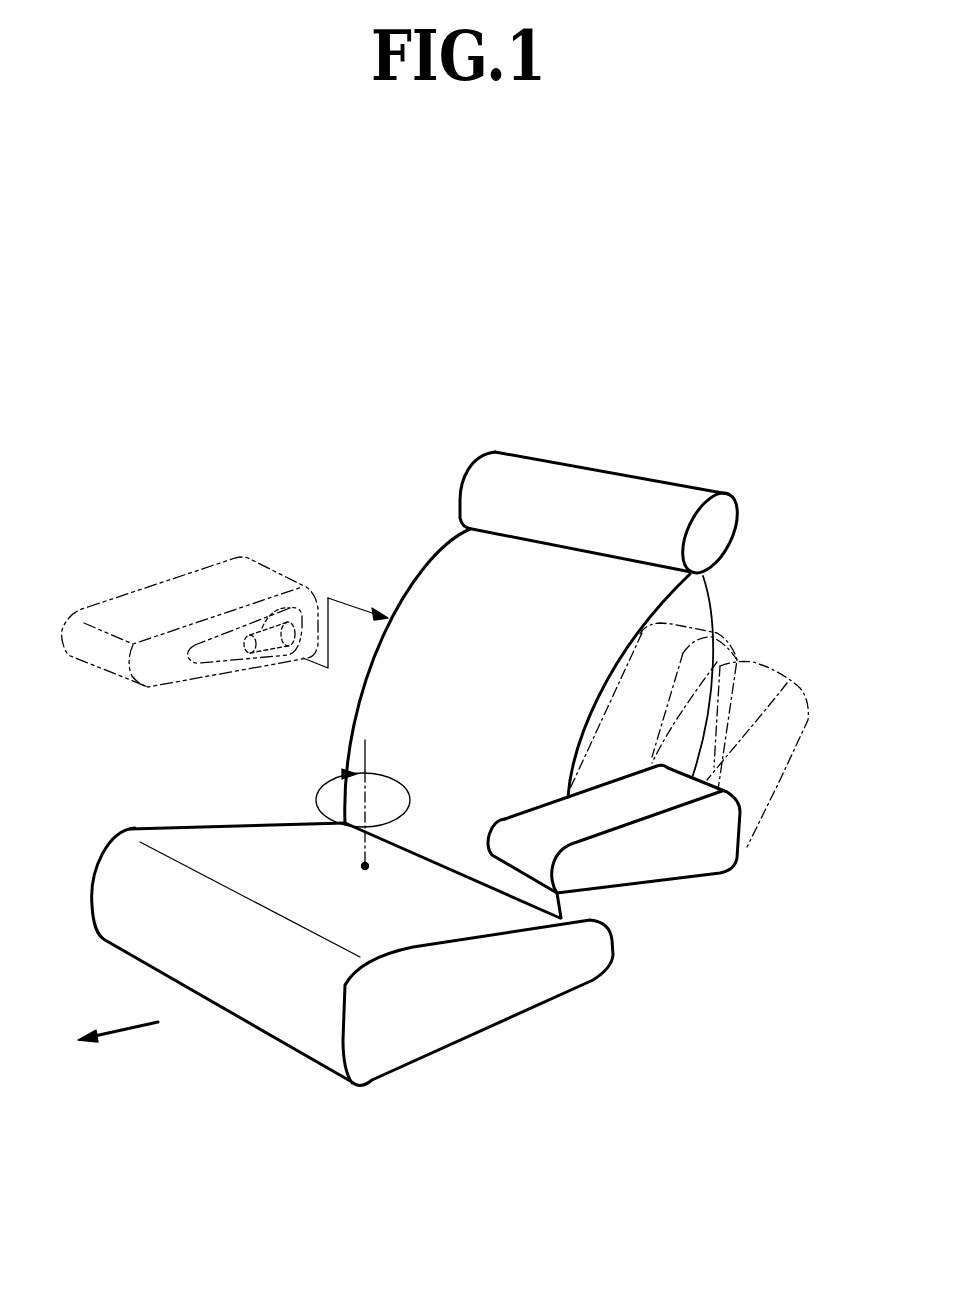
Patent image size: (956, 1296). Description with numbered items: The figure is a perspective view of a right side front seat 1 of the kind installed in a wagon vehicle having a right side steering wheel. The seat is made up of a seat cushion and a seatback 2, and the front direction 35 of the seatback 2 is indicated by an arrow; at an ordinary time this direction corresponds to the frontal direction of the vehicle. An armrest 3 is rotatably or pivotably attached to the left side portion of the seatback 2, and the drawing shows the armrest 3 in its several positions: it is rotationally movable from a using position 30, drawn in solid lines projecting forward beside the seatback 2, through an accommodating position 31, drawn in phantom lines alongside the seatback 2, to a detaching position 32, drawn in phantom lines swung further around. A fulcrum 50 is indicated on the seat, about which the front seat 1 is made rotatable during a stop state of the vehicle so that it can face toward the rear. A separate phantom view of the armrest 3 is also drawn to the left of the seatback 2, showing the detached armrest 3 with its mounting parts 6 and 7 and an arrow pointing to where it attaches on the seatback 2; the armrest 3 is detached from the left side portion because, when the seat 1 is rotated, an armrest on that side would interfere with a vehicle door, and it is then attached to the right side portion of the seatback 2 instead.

The front seat 1 is at (505, 993).
The seatback 2 is at (428, 585).
The armrest 3 is at (132, 593).
The mounting bracket 6 is at (318, 600).
The pivot knob 7 is at (242, 637).
The using position 30 is at (688, 880).
The accommodating position 31 is at (700, 622).
The detaching position 32 is at (800, 759).
The front direction 35 is at (115, 1033).
The fulcrum 50 is at (363, 866).